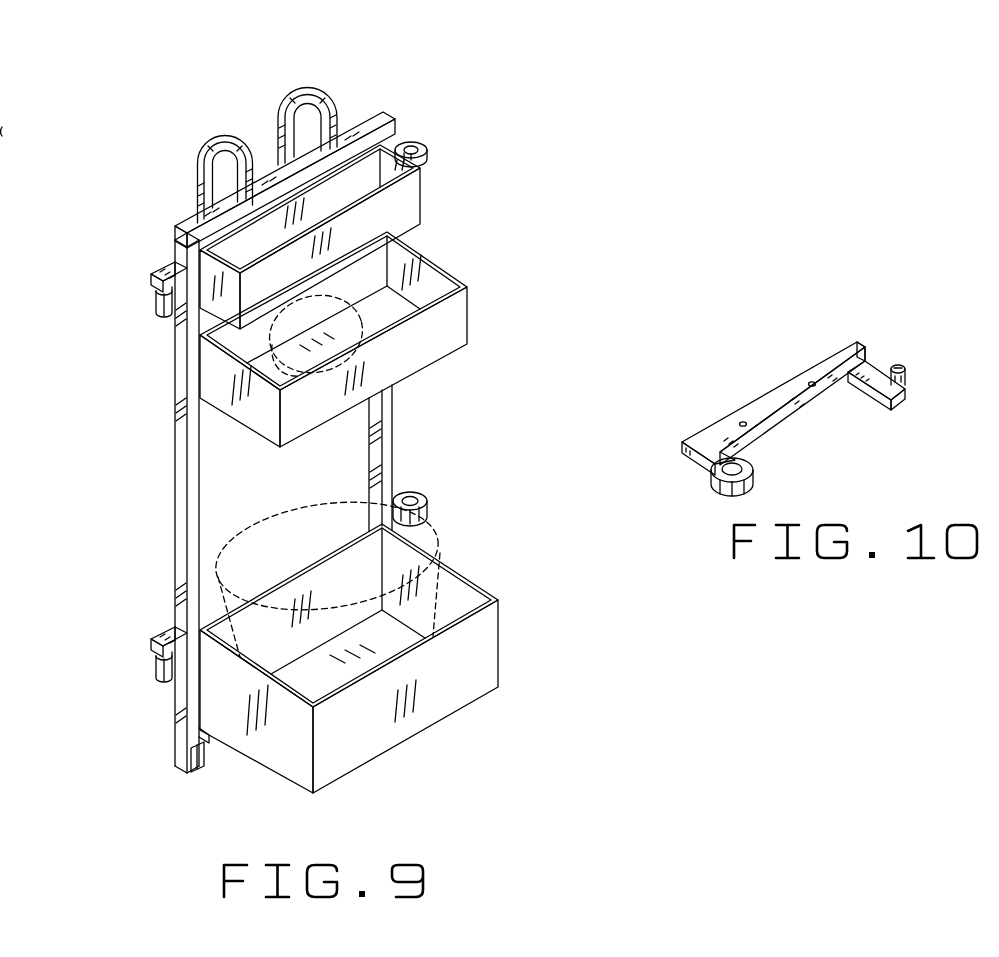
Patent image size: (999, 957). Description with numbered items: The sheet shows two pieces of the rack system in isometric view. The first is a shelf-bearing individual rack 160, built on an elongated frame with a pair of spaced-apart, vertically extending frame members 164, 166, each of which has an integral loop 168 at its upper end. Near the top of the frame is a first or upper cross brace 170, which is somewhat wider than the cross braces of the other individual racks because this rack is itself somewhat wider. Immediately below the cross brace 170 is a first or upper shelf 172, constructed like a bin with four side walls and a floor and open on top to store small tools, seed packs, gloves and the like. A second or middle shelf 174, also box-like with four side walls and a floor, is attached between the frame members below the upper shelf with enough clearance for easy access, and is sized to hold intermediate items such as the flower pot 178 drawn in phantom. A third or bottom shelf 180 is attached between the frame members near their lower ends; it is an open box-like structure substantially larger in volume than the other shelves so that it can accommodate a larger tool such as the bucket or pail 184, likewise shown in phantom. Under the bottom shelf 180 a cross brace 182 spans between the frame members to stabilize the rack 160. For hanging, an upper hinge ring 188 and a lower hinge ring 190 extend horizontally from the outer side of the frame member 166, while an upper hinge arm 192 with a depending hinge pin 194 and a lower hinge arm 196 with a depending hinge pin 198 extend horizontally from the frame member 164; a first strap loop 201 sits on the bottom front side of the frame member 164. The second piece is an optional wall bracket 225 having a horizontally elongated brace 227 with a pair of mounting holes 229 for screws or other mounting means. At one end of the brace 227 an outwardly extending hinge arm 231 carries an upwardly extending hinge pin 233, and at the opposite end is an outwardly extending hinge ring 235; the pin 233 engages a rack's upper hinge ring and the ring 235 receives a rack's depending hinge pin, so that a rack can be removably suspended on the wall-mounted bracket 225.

In FIG. 9, the shelf-bearing individual rack 160 is at (372, 86).
In FIG. 9, the vertical frame member 164 is at (193, 515).
In FIG. 9, the vertical frame member 166 is at (390, 412).
In FIG. 9, the integral loop 168 is at (306, 86).
In FIG. 9, the first or upper cross brace 170 is at (383, 112).
In FIG. 9, the first or upper shelf 172 is at (394, 200).
In FIG. 9, the second or middle shelf 174 is at (448, 323).
In FIG. 9, the flower pot 178 is at (356, 306).
In FIG. 9, the third or bottom shelf 180 is at (472, 657).
In FIG. 9, the cross brace 182 is at (209, 738).
In FIG. 9, the bucket or pail 184 is at (452, 530).
In FIG. 9, the upper hinge ring 188 is at (424, 141).
In FIG. 9, the lower hinge ring 190 is at (424, 494).
In FIG. 9, the upper hinge arm 192 is at (154, 276).
In FIG. 9, the depending hinge pin 194 is at (156, 312).
In FIG. 9, the lower hinge arm 196 is at (160, 642).
In FIG. 9, the depending hinge pin 198 is at (164, 670).
In FIG. 9, the first strap loop 201 is at (200, 773).
In FIG. 10, the wall bracket 225 is at (882, 328).
In FIG. 10, the horizontally elongated brace 227 is at (762, 396).
In FIG. 10, the mounting holes 229 is at (811, 381).
In FIG. 10, the hinge arm 231 is at (882, 394).
In FIG. 10, the hinge pin 233 is at (906, 368).
In FIG. 10, the hinge ring 235 is at (748, 461).